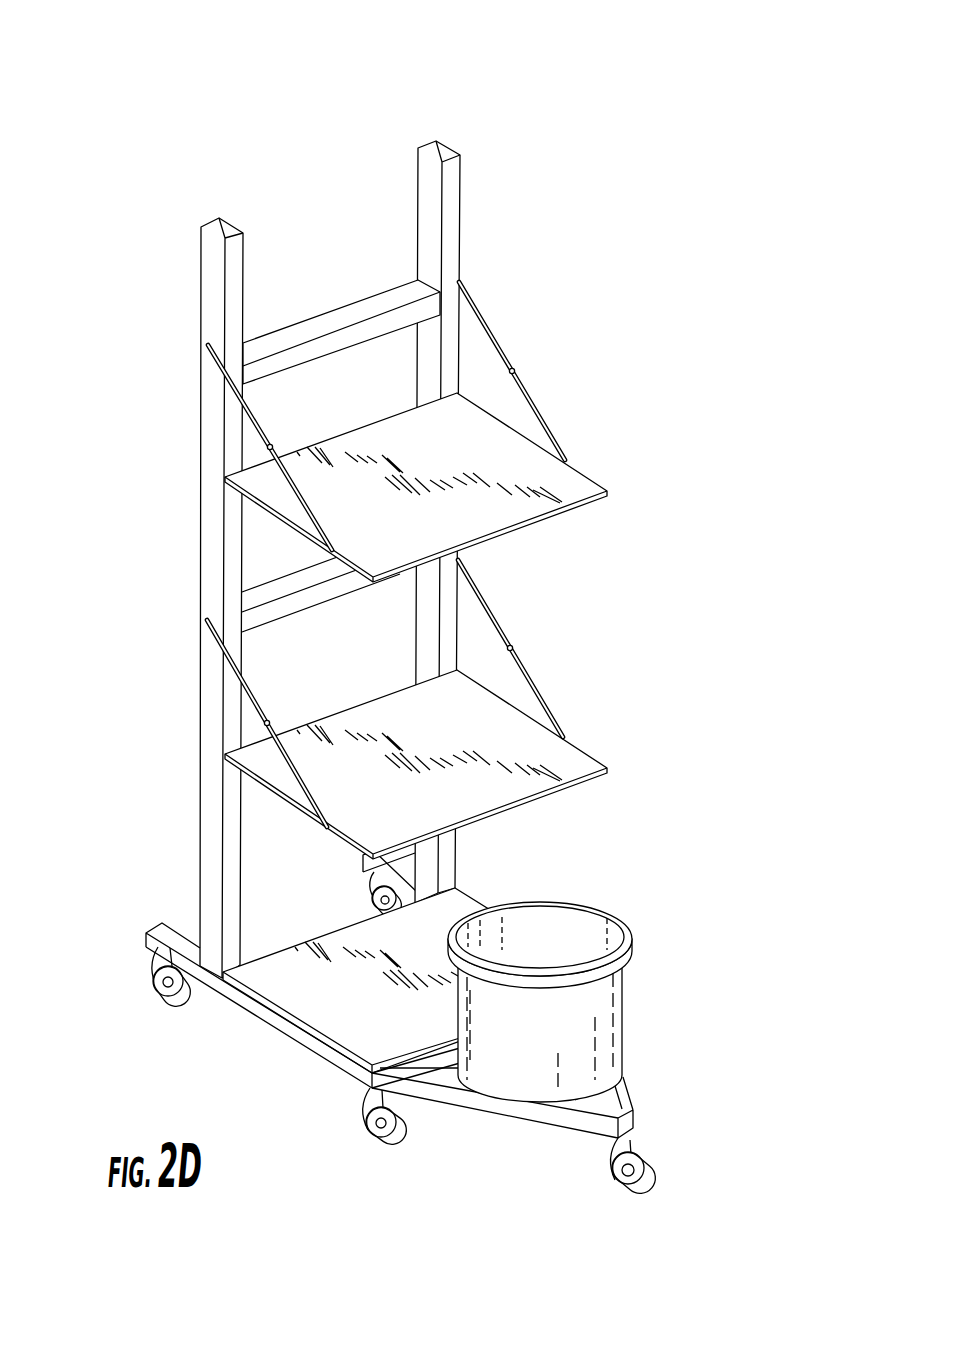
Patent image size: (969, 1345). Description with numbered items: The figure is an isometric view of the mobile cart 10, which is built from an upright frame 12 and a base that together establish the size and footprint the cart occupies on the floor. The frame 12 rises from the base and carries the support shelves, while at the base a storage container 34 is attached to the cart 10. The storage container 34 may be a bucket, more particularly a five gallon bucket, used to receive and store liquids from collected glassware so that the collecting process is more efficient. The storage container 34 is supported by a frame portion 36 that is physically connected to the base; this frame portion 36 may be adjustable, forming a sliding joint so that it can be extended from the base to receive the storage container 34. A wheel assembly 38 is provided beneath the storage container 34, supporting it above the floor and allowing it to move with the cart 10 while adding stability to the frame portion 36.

The mobile cart 10 is at (371, 623).
The frame 12 is at (128, 290).
The storage container 34 is at (610, 1012).
The frame portion 36 is at (525, 1117).
The wheel assembly 38 is at (652, 1170).